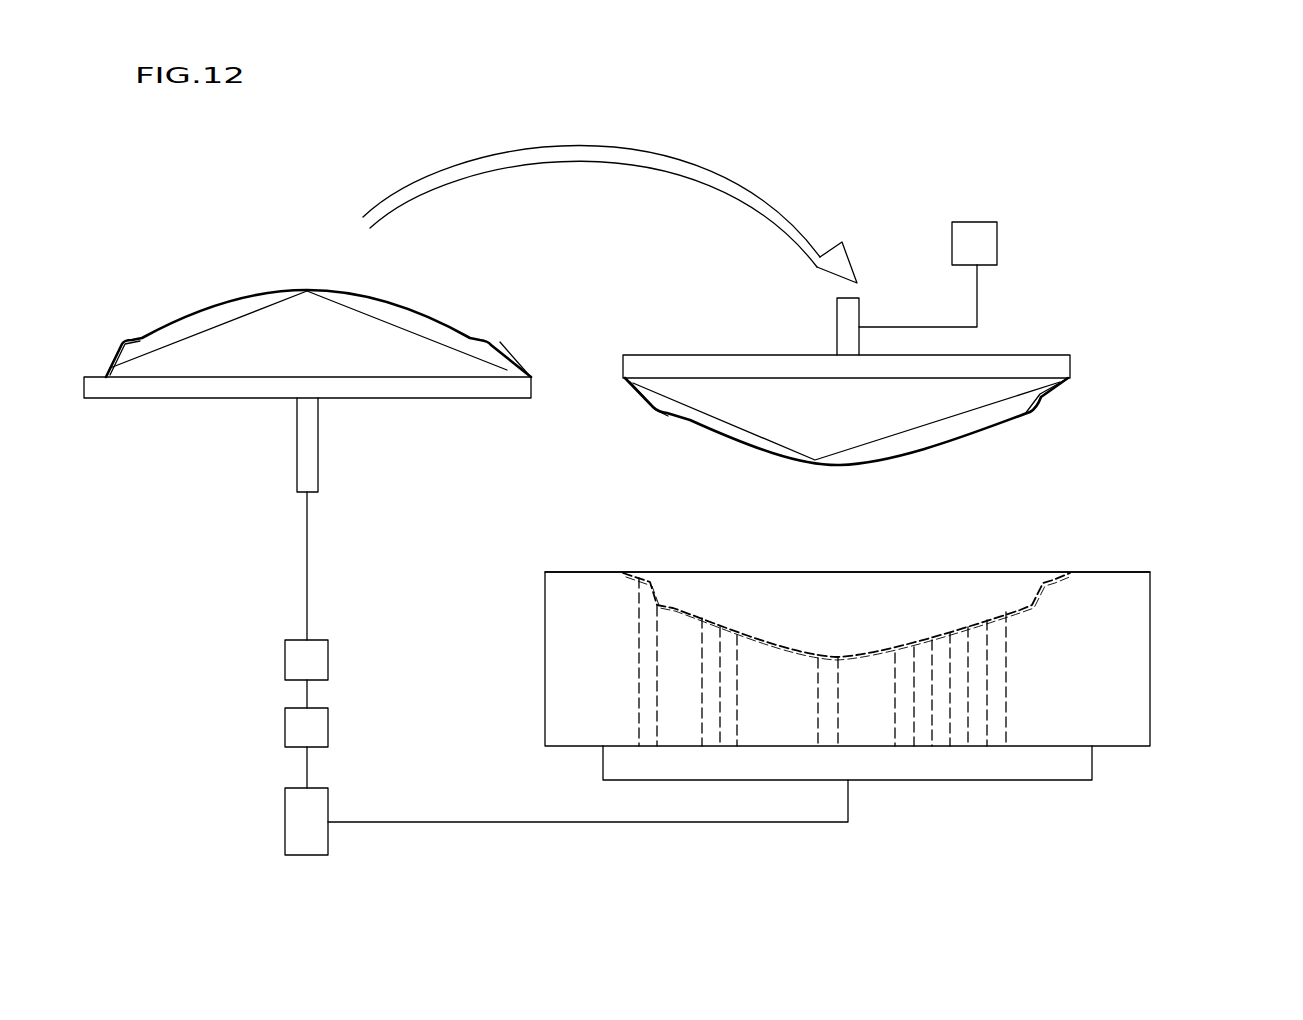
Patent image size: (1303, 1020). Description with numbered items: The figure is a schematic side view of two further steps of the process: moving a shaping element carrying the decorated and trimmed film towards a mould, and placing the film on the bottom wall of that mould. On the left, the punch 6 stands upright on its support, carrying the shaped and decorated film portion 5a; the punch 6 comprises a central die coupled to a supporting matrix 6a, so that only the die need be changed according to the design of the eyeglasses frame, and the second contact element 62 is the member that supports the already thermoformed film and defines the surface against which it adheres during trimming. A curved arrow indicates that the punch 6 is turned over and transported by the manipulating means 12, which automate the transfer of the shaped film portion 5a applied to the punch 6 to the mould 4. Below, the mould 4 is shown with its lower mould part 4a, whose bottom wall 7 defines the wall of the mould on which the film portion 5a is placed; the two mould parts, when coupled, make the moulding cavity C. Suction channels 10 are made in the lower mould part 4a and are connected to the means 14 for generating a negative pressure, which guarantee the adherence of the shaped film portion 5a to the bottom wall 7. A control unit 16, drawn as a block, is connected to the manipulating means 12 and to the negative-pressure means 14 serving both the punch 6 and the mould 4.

The mould 4 is at (1172, 598).
The lower mould part 4a is at (1140, 664).
The shaped and decorated film portion 5a is at (135, 340).
The punch 6 is at (467, 347).
The supporting matrix 6a is at (287, 348).
The second contact element 62 is at (337, 330).
The bottom wall 7 is at (1018, 612).
The suction channels 10 is at (912, 702).
The manipulating means 12 is at (641, 451).
The means for generating a negative pressure 14 is at (566, 801).
The control unit 16 is at (306, 713).
The moulding cavity C is at (925, 612).